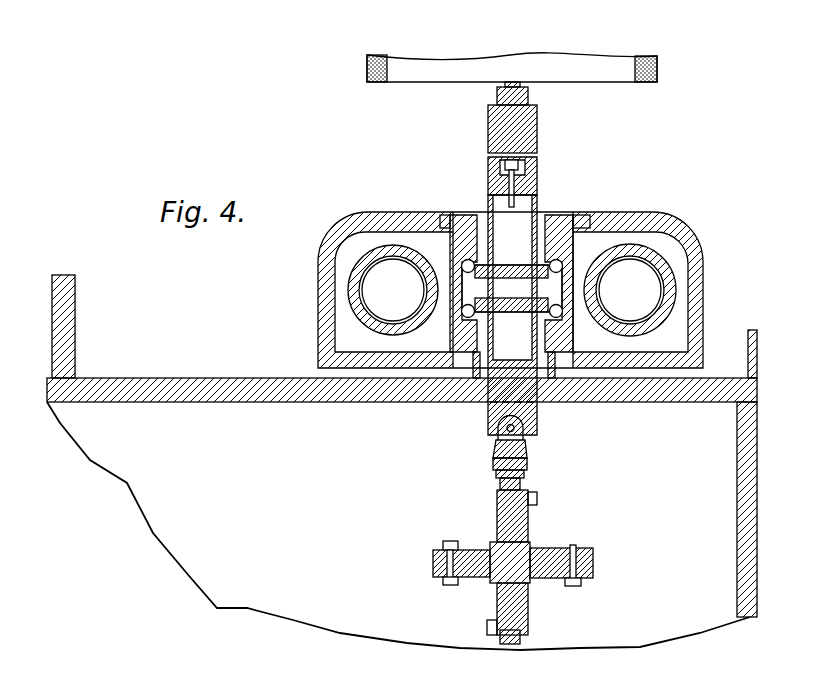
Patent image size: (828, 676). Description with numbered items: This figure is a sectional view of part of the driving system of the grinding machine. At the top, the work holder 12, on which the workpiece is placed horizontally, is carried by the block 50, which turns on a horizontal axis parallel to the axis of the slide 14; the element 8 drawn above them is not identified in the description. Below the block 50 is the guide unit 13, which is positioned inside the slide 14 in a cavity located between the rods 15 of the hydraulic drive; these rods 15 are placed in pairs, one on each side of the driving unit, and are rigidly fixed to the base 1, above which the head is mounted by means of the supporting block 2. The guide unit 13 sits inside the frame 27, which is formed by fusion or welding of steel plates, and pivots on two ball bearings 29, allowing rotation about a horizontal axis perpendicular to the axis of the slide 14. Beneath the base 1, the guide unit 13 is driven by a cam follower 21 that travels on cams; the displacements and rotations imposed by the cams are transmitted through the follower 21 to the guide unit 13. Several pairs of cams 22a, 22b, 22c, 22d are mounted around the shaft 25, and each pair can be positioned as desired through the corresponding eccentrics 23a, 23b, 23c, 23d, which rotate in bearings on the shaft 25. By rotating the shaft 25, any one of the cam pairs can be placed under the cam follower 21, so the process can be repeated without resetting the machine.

The base 1 is at (740, 433).
The supporting block 2 is at (65, 318).
The bar 8 is at (657, 78).
The work holder 12 is at (495, 97).
The guide unit 13 is at (540, 207).
The slide 14 is at (657, 217).
The rods 15 is at (353, 268).
The cam followers 21 is at (527, 453).
The cam 22a is at (521, 483).
The cam 22b is at (595, 560).
The cam 22c is at (520, 636).
The cam 22d is at (443, 584).
The eccentric 23a is at (528, 522).
The eccentric 23b is at (580, 578).
The eccentric 23c is at (528, 615).
The eccentric 23d is at (443, 551).
The shaft 25 is at (498, 578).
The frame 27 is at (563, 217).
The ball bearings 29 is at (470, 258).
The block 50 is at (490, 132).